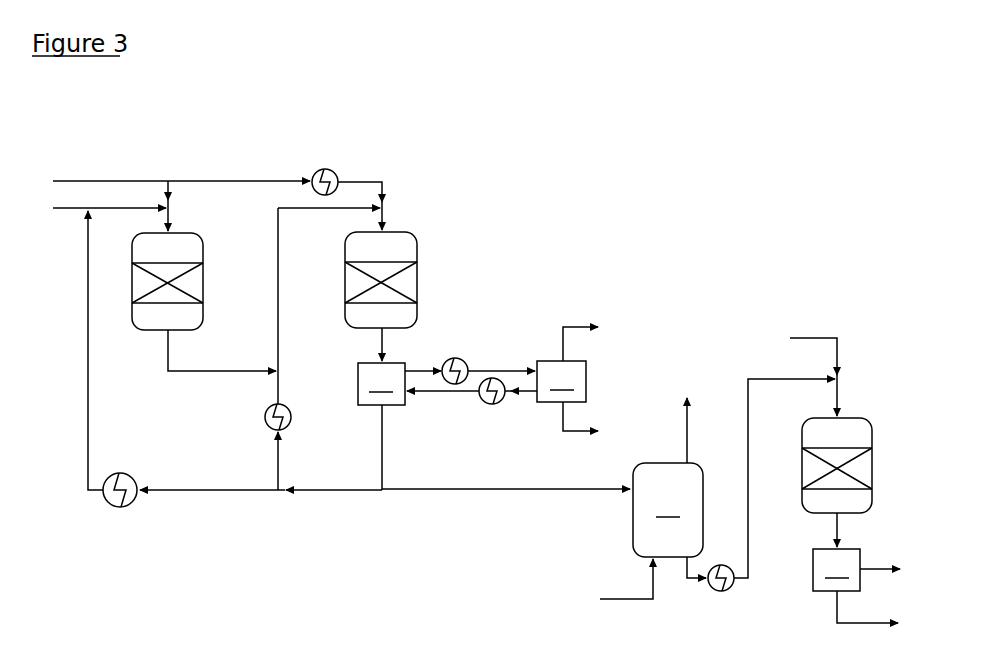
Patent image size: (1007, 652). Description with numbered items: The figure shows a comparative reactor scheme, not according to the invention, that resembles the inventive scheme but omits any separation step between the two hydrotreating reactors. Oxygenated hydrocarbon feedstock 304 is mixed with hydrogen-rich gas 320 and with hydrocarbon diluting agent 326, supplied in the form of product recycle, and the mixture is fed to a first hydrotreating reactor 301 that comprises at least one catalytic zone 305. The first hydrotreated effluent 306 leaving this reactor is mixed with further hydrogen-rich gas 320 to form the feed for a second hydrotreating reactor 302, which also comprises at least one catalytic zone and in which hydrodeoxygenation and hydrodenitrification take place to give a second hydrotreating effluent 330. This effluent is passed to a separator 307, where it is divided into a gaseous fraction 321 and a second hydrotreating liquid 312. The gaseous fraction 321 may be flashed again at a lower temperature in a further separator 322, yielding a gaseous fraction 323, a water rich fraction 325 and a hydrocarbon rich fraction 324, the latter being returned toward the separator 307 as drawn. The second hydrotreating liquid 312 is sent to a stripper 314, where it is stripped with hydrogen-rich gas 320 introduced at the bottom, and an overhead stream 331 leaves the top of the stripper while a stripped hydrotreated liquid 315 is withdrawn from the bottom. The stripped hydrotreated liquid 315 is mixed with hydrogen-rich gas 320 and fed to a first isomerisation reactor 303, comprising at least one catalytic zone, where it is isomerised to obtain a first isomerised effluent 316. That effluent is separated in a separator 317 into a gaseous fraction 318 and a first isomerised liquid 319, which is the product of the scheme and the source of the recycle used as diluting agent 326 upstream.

The hydrogen-rich gas 320 is at (108, 178).
The oxygenated hydrocarbon feedstock 304 is at (80, 206).
The first hydrotreating reactor 301 is at (203, 243).
The catalytic zone 305 is at (196, 282).
The second hydrotreating reactor 302 is at (417, 248).
The second hydrotreating effluent 330 is at (380, 343).
The first hydrotreated effluent 306 is at (168, 358).
The hydrocarbon diluting agent 326 is at (88, 382).
The separator 307 is at (381, 426).
The second hydrotreating liquid 312 is at (438, 484).
The gaseous fraction 321 is at (422, 366).
The hydrocarbon rich fraction 324 is at (536, 395).
The separator 322 is at (561, 381).
The gaseous fraction 323 is at (563, 325).
The water rich fraction 325 is at (578, 432).
The stripper 314 is at (668, 510).
The stripper overhead stream 331 is at (683, 415).
The stripped hydrotreated liquid 315 is at (783, 382).
The first isomerisation reactor 303 is at (872, 432).
The first isomerised effluent 316 is at (830, 530).
The separator 317 is at (836, 570).
The gaseous fraction 318 is at (885, 566).
The first isomerised liquid 319 is at (832, 612).